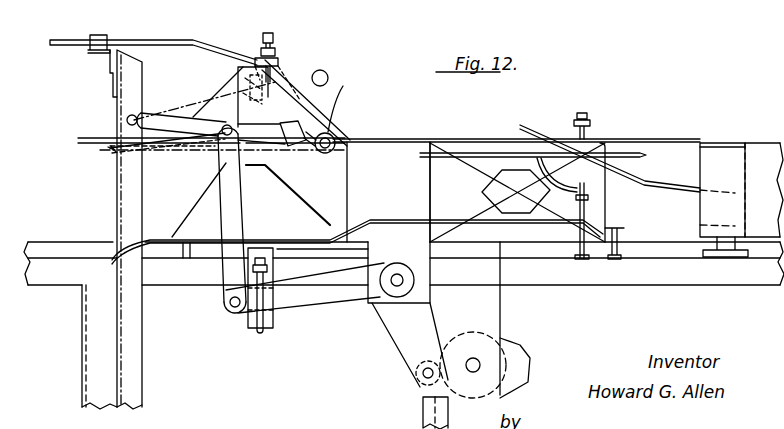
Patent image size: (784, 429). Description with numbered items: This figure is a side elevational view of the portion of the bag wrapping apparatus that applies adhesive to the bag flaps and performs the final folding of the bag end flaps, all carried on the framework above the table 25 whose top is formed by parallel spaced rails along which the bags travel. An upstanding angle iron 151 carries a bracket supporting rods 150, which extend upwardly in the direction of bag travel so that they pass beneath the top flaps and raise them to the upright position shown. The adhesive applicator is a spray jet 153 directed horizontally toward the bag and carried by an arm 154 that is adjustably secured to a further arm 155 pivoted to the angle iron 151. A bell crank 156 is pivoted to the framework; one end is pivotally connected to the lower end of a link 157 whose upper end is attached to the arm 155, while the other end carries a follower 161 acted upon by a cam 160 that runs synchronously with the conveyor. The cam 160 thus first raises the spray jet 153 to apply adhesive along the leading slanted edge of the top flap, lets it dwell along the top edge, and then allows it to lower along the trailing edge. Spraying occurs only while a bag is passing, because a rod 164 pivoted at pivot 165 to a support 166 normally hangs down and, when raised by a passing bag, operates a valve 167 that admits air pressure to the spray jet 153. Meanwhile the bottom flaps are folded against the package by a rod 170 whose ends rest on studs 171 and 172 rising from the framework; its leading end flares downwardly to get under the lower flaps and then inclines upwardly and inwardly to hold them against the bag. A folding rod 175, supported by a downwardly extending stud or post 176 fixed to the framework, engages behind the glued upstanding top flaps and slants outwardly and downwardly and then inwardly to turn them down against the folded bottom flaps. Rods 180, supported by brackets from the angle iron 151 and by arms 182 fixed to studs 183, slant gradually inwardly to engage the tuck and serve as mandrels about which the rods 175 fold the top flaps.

The table 25 is at (25, 234).
The upstanding angle iron 151 is at (117, 200).
The support 166 is at (157, 40).
The valve 167 is at (296, 40).
The pivot 165 is at (240, 290).
The rails or rods 150 is at (243, 67).
The arm 155 is at (163, 118).
The link 157 is at (222, 163).
The arm 154 is at (287, 150).
The rod 164 is at (338, 135).
The spray jet 153 is at (328, 78).
The rods 180 is at (421, 138).
The folding rod or bar 175 is at (652, 180).
The stud or post 176 is at (590, 125).
The arms 182 is at (547, 176).
The rod 170 is at (389, 220).
The stud 171 is at (186, 259).
The bell crank 156 is at (319, 306).
The cam 160 is at (507, 345).
The follower 161 is at (418, 385).
The studs 183 is at (573, 244).
The stud 172 is at (620, 250).